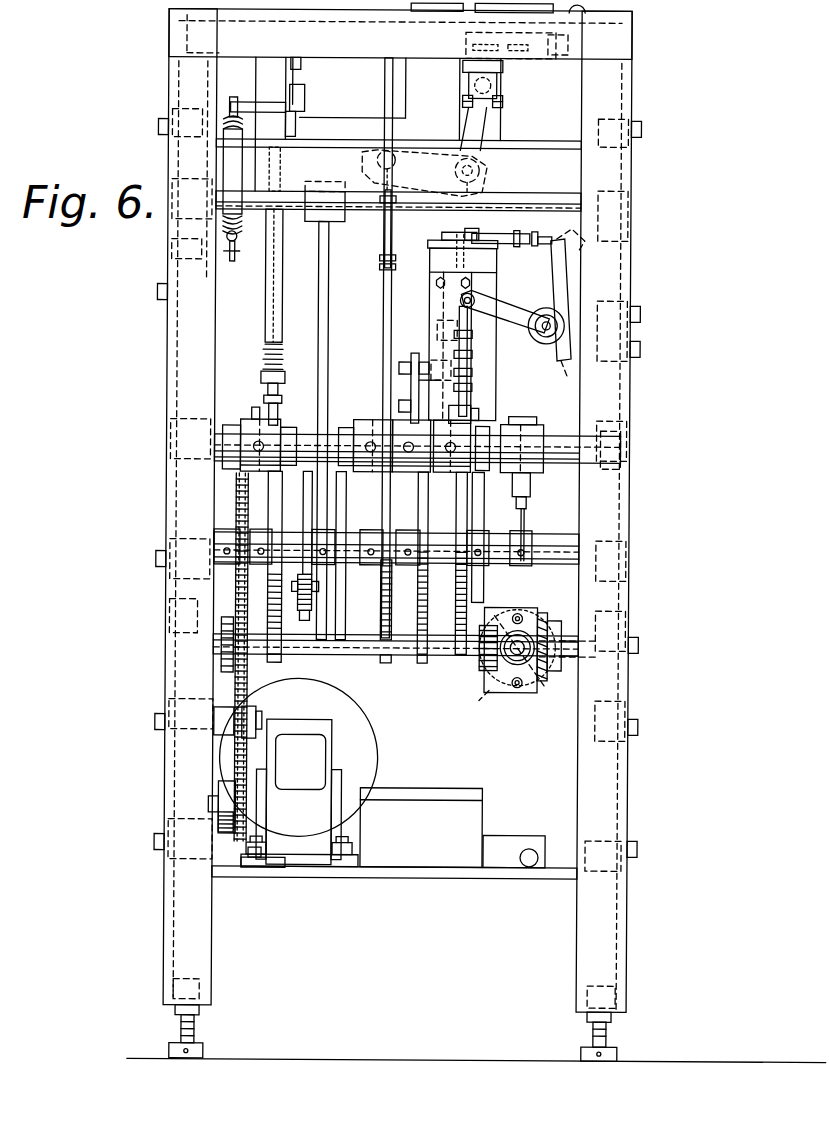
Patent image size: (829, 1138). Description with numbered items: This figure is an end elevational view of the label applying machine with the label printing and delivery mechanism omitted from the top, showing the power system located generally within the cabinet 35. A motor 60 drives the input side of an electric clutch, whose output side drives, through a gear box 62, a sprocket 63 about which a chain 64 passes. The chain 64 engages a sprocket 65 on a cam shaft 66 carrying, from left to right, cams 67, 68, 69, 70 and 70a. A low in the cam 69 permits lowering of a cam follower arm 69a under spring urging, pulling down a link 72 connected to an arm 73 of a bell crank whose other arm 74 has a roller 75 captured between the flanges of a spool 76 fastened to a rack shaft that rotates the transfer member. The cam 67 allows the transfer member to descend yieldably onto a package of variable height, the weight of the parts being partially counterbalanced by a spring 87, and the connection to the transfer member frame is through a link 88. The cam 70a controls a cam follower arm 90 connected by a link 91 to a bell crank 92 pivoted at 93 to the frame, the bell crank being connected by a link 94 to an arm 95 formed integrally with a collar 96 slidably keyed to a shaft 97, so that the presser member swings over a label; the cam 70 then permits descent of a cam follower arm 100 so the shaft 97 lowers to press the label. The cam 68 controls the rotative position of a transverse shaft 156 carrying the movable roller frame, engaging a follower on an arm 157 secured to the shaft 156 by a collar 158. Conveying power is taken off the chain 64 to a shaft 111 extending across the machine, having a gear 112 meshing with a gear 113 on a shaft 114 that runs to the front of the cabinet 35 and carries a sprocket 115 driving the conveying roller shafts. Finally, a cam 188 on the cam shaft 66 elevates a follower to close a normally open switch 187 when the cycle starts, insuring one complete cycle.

The cabinet 35 is at (630, 394).
The motor 60 is at (378, 758).
The gear box 62 is at (312, 844).
The sprocket 63 is at (240, 858).
The chain 64 is at (236, 607).
The sprocket 65 is at (236, 490).
The cam shaft 66 is at (344, 542).
The cam 67 is at (278, 508).
The cam 68 is at (312, 617).
The cam 69 is at (381, 600).
The cam follower arm 69a is at (378, 472).
The cam 70 is at (418, 650).
The cam 70a is at (462, 652).
The link 72 is at (386, 331).
The arm of bell crank 73 is at (401, 230).
The arm of bell crank 74 is at (475, 130).
The roller 75 is at (492, 84).
The spool 76 is at (498, 106).
The spring 87 is at (228, 250).
The link 88 is at (278, 306).
The cam follower arm 90 is at (455, 396).
The link 91 is at (462, 389).
The bell crank 92 is at (503, 335).
The pivot 93 is at (562, 356).
The link 94 is at (528, 236).
The arm 95 is at (480, 252).
The collar 96 is at (432, 262).
The shaft 97 is at (470, 206).
The cam follower arm 100 is at (418, 350).
The shaft 111 is at (370, 656).
The gear 112 is at (530, 618).
The gear 113 is at (508, 690).
The shaft 114 is at (492, 685).
The sprocket 115 is at (478, 620).
The shaft 156 is at (385, 208).
The arm 157 is at (300, 335).
The collar 158 is at (330, 222).
The switch 187 is at (522, 428).
The cam 188 is at (532, 520).